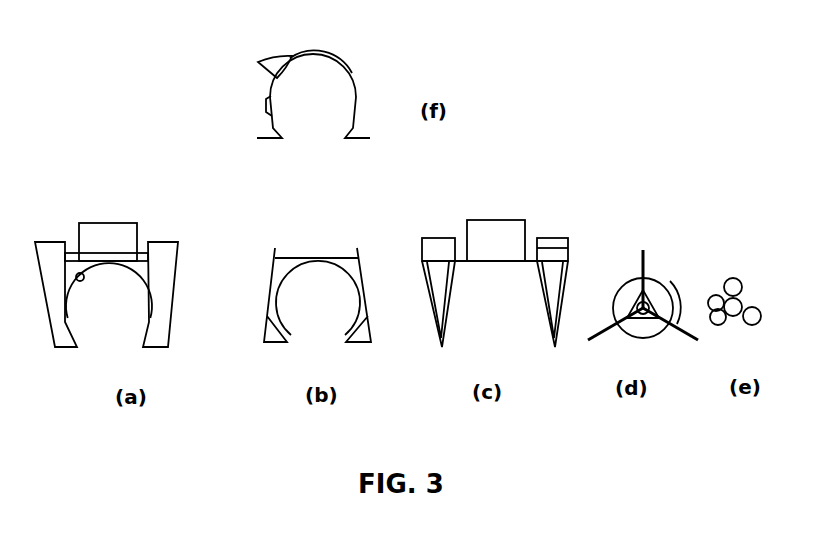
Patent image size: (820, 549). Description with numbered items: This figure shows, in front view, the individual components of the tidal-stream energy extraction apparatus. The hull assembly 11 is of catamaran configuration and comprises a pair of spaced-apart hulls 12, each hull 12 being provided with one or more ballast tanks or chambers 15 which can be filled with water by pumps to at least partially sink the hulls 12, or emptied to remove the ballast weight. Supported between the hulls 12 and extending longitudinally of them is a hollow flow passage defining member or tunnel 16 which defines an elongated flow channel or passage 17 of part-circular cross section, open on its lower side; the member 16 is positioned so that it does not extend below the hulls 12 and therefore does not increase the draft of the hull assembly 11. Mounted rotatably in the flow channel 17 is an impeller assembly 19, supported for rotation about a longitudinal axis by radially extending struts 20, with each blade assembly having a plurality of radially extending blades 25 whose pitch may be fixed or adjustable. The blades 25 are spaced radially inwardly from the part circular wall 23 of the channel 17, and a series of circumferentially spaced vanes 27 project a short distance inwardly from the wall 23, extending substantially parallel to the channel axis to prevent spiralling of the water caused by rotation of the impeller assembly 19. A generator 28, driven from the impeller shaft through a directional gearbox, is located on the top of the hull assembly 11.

The hull assembly 11 is at (172, 238).
The hulls 12 is at (47, 293).
The ballast tanks or chambers 15 is at (437, 243).
The flow passage defining member or tunnel 16 is at (354, 72).
The flow channel or passage 17 is at (333, 107).
The impeller assembly 19 is at (626, 274).
The radially extending struts 20 is at (647, 263).
The part circular wall of the flow channel 23 is at (270, 114).
The blades 25 is at (726, 283).
The vanes 27 is at (265, 63).
The generator 28 is at (118, 226).